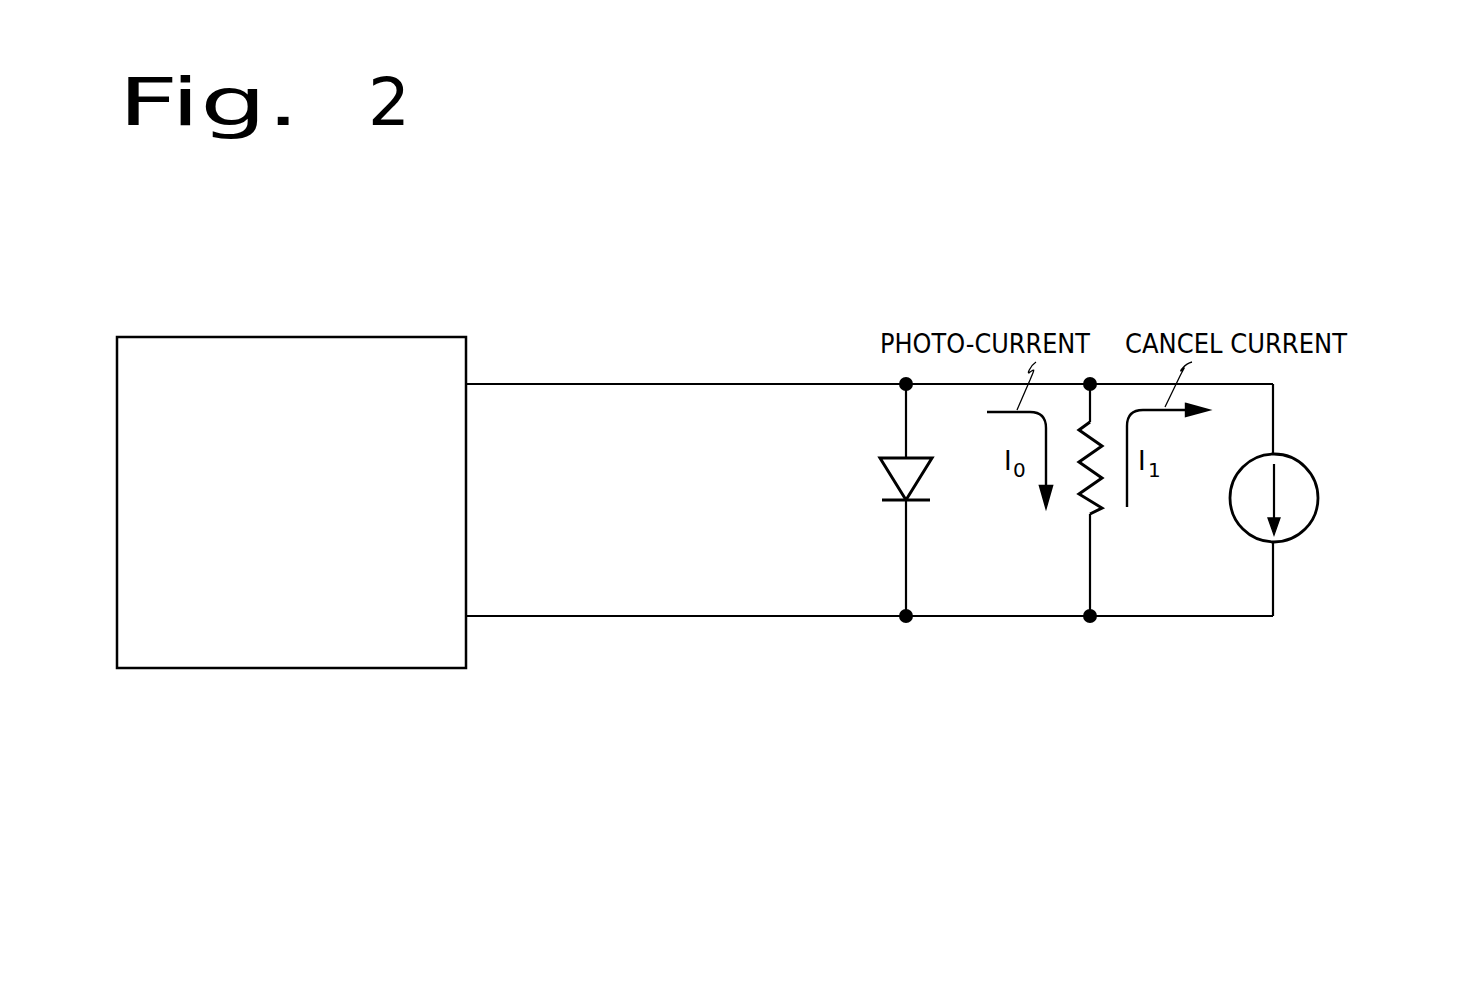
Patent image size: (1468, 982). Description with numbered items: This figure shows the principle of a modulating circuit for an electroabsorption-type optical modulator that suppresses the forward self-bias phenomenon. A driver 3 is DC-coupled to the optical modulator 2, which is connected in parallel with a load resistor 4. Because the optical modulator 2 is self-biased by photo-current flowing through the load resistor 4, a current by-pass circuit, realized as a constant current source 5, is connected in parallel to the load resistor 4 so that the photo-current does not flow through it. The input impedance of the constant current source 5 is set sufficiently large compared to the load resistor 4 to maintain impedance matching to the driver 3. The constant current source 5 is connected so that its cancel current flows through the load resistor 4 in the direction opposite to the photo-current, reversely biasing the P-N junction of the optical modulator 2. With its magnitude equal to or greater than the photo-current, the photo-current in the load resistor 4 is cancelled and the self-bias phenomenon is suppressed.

The optical modulator 2 is at (894, 505).
The driver 3 is at (239, 335).
The load resistor 4 is at (1094, 516).
The constant current source 5 is at (1318, 480).